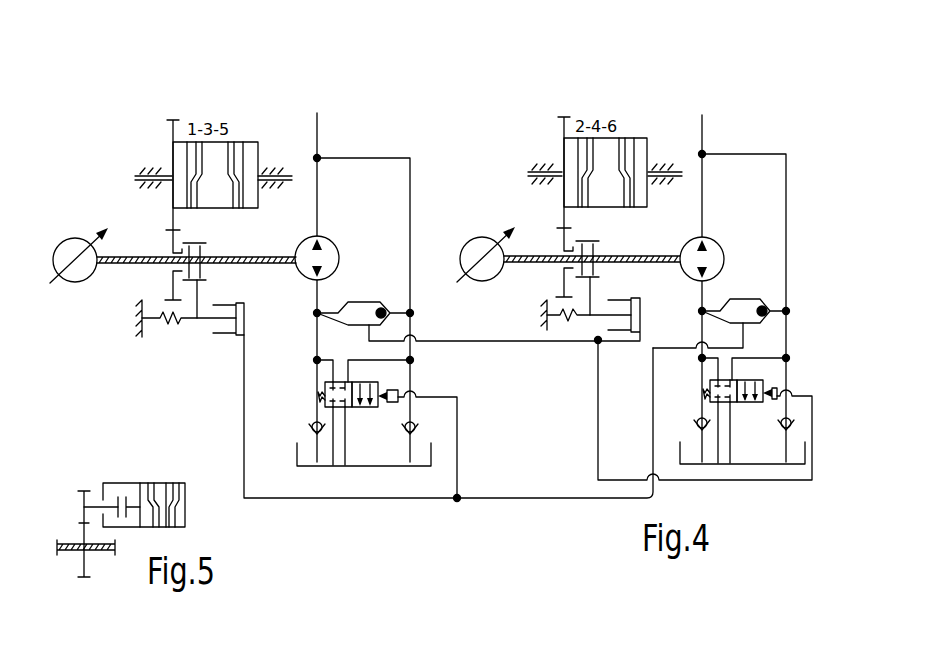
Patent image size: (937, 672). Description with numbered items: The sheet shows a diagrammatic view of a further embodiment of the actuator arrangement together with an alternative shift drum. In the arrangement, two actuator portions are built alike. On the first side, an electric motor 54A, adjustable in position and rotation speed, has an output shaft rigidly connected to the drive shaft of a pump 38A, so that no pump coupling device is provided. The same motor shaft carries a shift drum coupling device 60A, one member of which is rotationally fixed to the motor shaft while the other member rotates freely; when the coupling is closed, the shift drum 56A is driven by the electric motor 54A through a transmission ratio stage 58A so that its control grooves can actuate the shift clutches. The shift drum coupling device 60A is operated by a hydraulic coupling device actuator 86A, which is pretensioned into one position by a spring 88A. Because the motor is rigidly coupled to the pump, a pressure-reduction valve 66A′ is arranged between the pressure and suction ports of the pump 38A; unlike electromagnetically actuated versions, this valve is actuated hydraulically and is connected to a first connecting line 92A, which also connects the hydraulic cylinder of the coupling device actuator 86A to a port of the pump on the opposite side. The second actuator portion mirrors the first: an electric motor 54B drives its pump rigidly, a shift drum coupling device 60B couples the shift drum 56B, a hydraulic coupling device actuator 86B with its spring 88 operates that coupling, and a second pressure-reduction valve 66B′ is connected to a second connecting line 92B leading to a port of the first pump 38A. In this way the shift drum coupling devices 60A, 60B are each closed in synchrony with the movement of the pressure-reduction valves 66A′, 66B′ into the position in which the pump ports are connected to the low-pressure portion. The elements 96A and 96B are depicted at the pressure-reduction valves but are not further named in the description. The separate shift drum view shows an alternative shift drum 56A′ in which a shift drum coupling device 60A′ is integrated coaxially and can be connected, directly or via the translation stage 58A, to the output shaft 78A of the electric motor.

In FIG. 4, the shift drum 56A is at (175, 152).
In FIG. 4, the electric motor 54A is at (84, 238).
In FIG. 4, the shift drum coupling device 60A is at (222, 241).
In FIG. 4, the pump 38A is at (335, 247).
In FIG. 4, the spring 88A is at (168, 334).
In FIG. 4, the hydraulic coupling device actuator 86A is at (212, 345).
In FIG. 4, the first pressure-reduction valve 66A′ is at (357, 407).
In FIG. 4, the pilot valve / pressure line 96A is at (385, 407).
In FIG. 4, the first connecting line 92A is at (503, 500).
In FIG. 4, the shift drum 56B is at (568, 143).
In FIG. 4, the electric motor 54B is at (490, 236).
In FIG. 4, the shift drum coupling device 60B is at (615, 237).
In FIG. 4, the hydraulic coupling device actuator 86B is at (627, 291).
In FIG. 4, the second connecting line 92B is at (497, 338).
In FIG. 4, the spring 88 is at (567, 324).
In FIG. 4, the second pressure-reduction valve 66B′ is at (745, 402).
In FIG. 4, the pilot valve / pressure line 96B is at (763, 402).
In FIG. 5, the transmission ratio stage 58A is at (83, 500).
In FIG. 5, the shift drum coupling device 60A′ is at (126, 502).
In FIG. 5, the shift drum 56A′ is at (184, 490).
In FIG. 5, the output shaft 78A is at (65, 553).